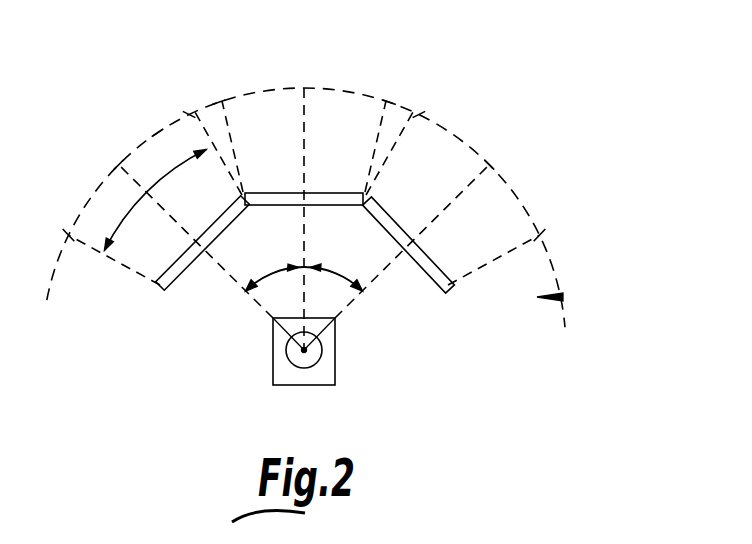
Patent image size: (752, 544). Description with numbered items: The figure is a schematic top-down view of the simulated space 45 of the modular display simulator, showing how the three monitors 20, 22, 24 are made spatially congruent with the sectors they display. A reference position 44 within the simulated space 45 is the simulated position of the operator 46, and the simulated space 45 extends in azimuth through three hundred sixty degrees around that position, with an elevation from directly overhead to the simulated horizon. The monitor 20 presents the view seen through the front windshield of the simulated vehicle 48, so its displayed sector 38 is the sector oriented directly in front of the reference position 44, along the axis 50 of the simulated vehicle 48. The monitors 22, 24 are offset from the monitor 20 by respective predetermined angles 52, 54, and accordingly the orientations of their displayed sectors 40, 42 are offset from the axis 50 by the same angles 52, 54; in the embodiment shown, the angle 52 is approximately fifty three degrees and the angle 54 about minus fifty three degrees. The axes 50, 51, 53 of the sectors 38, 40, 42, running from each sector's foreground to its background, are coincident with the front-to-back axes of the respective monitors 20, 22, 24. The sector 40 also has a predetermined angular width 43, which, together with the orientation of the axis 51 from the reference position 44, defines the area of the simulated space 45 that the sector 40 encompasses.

The monitor 20 is at (278, 192).
The monitor 22 is at (170, 261).
The monitor 24 is at (447, 278).
The sector 38 is at (345, 118).
The sector 40 is at (168, 144).
The sector 42 is at (495, 212).
The angular width 43 is at (162, 178).
The reference position 44 is at (304, 352).
The simulated space 45 is at (563, 297).
The operator 46 is at (322, 358).
The simulated vehicle 48 is at (273, 336).
The axis 50 is at (305, 102).
The axis 51 is at (148, 184).
The angle 52 is at (265, 303).
The axis 53 is at (474, 179).
The angle 54 is at (342, 304).